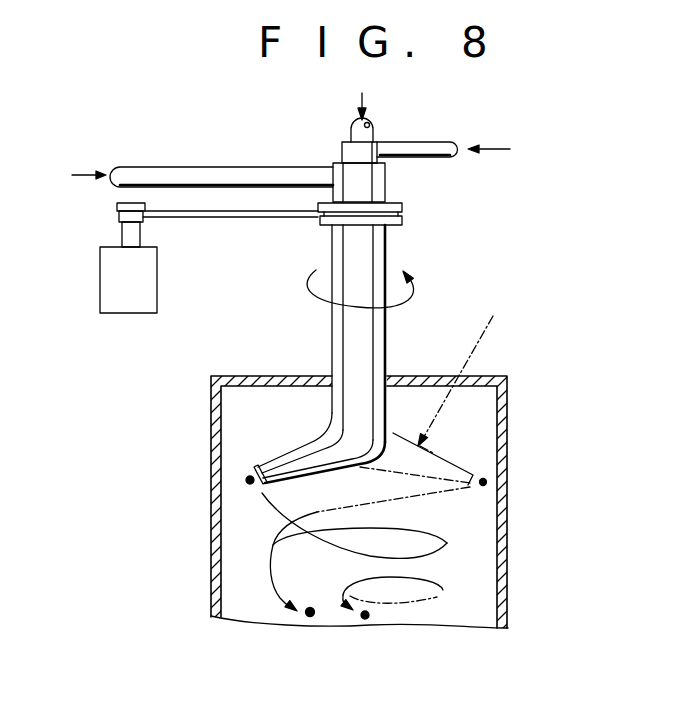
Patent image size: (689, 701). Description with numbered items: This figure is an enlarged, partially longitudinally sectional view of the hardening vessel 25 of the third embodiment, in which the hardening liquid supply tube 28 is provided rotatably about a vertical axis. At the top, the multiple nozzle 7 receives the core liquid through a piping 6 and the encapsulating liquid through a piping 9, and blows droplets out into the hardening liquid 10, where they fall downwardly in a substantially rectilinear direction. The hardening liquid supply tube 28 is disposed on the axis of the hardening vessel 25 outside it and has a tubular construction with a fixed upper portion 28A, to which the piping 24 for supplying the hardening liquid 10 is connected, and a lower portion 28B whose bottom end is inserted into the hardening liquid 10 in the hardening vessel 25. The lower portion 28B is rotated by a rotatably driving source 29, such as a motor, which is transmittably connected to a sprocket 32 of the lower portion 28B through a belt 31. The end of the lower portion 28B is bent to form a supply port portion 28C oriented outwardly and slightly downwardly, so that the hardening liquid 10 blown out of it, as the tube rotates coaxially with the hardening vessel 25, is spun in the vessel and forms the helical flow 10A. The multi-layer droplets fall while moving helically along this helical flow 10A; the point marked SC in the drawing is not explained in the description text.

The piping 6 is at (372, 132).
The multiple nozzle 7 is at (342, 148).
The piping 9 is at (438, 143).
The piping 24 is at (252, 175).
The hardening liquid supply tube 28 is at (396, 343).
The fixed upper portion 28A is at (385, 185).
The lower portion 28B is at (333, 330).
The supply port portion 28C is at (256, 466).
The rotatably driving source 29 is at (106, 278).
The belt 31 is at (198, 215).
The sprocket 32 is at (400, 225).
The hardening vessel 25 is at (212, 533).
The hardening liquid 10 is at (480, 508).
The helical flow 10A is at (443, 590).
The stirring center SC is at (246, 479).